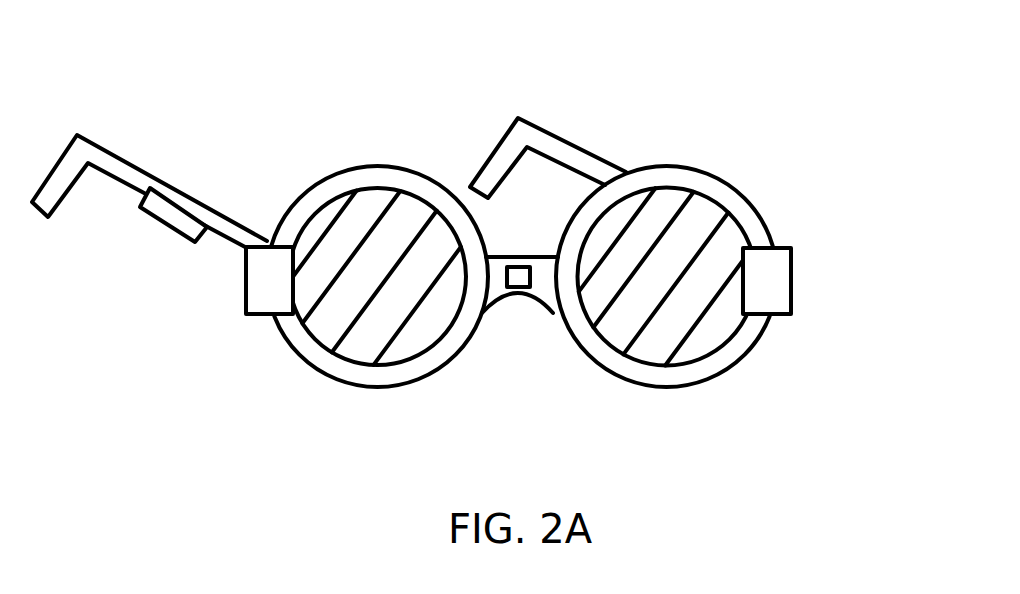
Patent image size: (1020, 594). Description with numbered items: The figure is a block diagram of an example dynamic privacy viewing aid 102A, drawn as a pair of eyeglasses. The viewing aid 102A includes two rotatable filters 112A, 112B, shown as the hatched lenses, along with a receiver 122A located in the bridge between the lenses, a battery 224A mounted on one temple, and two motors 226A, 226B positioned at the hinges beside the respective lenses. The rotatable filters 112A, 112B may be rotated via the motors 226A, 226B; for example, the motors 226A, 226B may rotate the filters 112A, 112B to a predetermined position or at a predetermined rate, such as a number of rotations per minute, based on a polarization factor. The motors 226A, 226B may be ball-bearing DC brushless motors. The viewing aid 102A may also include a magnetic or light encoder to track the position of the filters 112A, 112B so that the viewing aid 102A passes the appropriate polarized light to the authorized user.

The dynamic privacy viewing aid 102A is at (808, 60).
The rotatable filter 112A is at (324, 200).
The rotatable filter 112B is at (684, 192).
The receiver 122A is at (517, 289).
The battery 224A is at (180, 233).
The motor 226A is at (247, 315).
The motor 226B is at (783, 315).